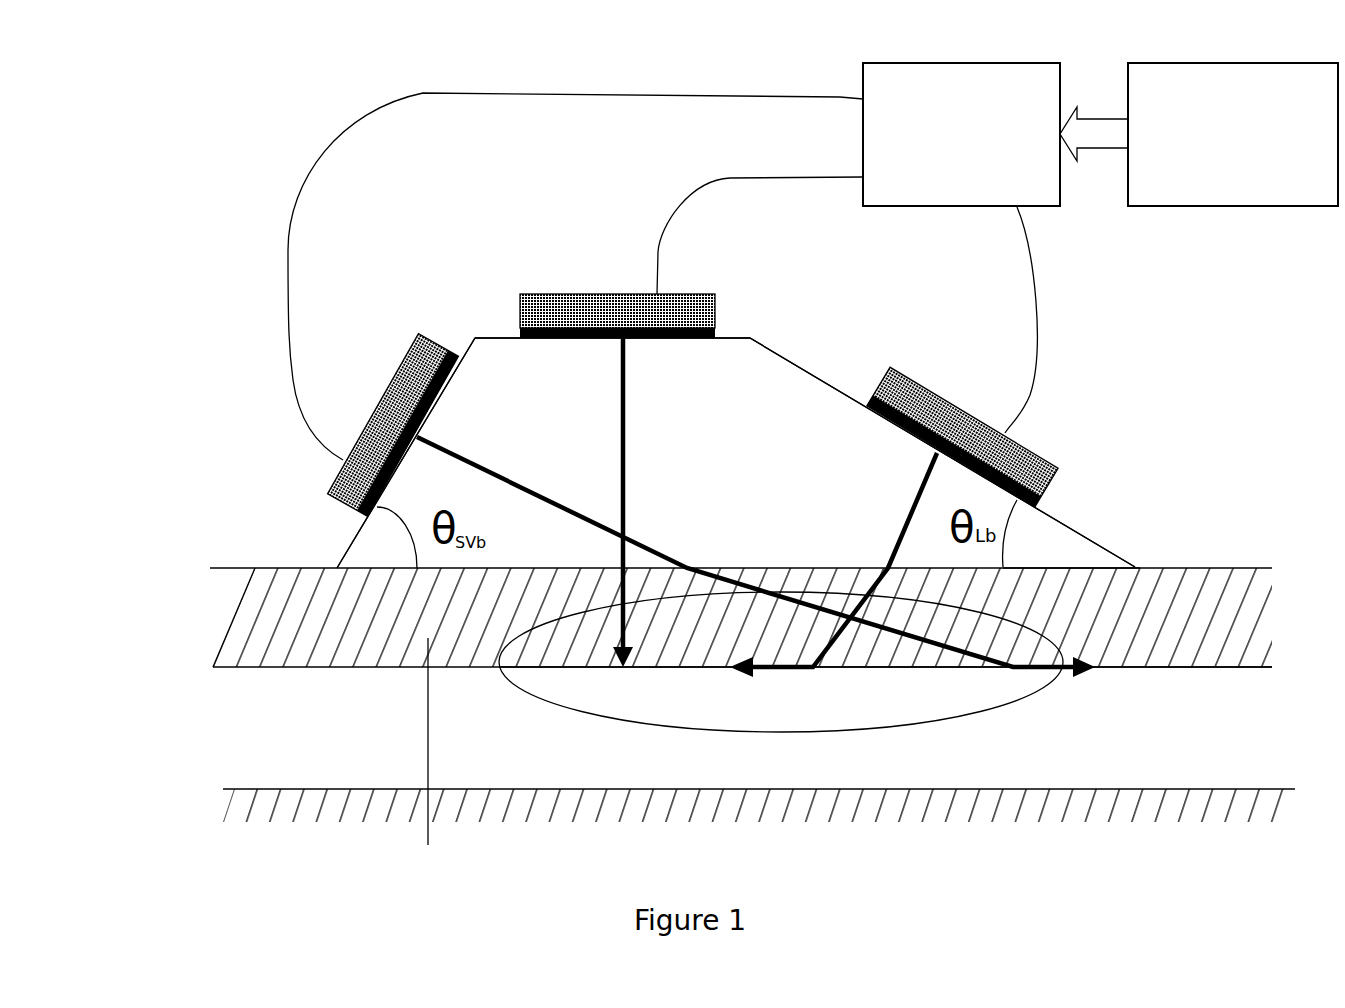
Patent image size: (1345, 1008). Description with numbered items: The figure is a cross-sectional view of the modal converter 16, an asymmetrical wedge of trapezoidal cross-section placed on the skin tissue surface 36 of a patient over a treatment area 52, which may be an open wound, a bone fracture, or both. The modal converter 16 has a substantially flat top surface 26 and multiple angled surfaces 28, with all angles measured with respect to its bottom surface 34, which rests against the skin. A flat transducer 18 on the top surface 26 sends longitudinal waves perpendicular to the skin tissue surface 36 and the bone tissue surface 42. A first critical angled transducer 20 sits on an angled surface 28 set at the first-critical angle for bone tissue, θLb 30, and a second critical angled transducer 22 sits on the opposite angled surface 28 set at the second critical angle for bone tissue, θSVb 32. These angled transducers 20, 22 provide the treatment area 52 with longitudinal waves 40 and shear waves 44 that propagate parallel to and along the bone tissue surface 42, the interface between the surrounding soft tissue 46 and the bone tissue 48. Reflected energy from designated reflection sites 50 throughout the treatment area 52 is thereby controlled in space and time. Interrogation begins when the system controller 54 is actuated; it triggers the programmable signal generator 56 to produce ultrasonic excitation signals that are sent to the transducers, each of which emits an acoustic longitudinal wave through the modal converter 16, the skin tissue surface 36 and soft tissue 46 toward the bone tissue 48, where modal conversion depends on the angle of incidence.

The modal converter 16 is at (762, 438).
The flat transducer 18 is at (588, 293).
The first critical angled transducer 20 is at (947, 402).
The second critical angled transducer 22 is at (382, 392).
The top surface 26 is at (496, 337).
The angled surfaces 28 is at (348, 548).
The first-critical angle for bone tissue (θLb) 30 is at (1007, 532).
The second critical angle for bone tissue (θSVb) 32 is at (368, 520).
The bottom surface 34 is at (1040, 567).
The skin tissue surface 36 is at (220, 569).
The longitudinal waves 40 is at (730, 672).
The bone tissue surface 42 is at (217, 668).
The shear waves 44 is at (1053, 673).
The soft tissue 46 is at (373, 822).
The bone tissue 48 is at (362, 747).
The reflection sites 50 is at (756, 556).
The treatment area 52 is at (797, 710).
The system controller 54 is at (1257, 207).
The programmable signal generator 56 is at (1038, 207).